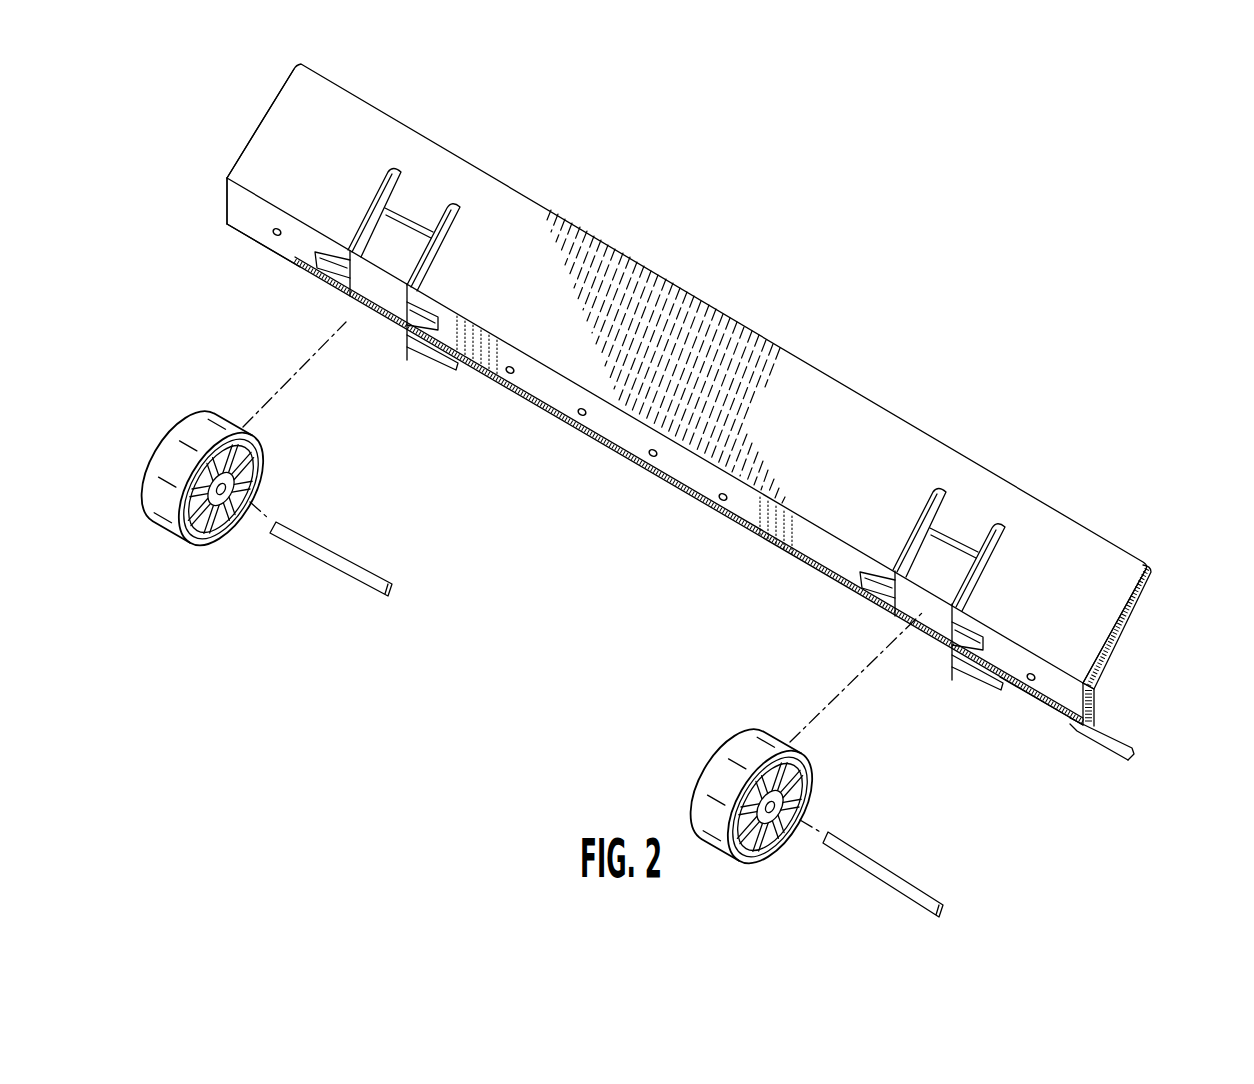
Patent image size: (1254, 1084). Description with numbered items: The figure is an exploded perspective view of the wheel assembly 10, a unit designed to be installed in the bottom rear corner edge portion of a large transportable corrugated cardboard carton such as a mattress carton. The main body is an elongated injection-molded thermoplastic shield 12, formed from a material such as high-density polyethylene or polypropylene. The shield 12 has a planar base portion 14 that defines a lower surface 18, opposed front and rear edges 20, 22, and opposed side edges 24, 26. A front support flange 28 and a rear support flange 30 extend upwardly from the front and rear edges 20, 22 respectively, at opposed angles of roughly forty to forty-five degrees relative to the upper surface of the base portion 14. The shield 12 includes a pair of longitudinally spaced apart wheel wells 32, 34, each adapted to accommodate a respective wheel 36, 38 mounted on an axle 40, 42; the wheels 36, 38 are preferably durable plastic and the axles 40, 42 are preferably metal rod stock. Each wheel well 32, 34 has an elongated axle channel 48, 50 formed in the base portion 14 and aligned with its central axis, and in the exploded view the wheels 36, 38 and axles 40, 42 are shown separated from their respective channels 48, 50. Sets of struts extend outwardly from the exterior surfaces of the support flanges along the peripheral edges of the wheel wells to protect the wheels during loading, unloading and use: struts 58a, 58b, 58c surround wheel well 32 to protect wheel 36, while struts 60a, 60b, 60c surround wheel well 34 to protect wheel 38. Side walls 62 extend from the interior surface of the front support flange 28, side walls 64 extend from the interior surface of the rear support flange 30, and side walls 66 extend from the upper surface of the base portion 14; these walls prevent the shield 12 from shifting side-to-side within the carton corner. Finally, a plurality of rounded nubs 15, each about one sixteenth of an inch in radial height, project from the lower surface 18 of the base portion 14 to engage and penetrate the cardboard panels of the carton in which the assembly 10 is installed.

The wheel assembly 10 is at (862, 274).
The shield 12 is at (784, 345).
The base portion 14 is at (673, 467).
The rounded nubs 15 is at (727, 503).
The lower surface 18 is at (602, 427).
The front edge 20 is at (240, 182).
The rear edge 22 is at (236, 228).
The side edge 24 is at (224, 203).
The side edge 26 is at (1070, 720).
The front support flange 28 is at (1122, 557).
The rear support flange 30 is at (1113, 754).
The wheel well 32 is at (416, 208).
The wheel well 34 is at (978, 504).
The wheel 36 is at (153, 523).
The wheel 38 is at (755, 861).
The axle 40 is at (340, 557).
The axle 42 is at (912, 882).
The axle channel 48 is at (411, 287).
The axle channel 50 is at (915, 603).
The strut 58a is at (369, 210).
The strut 58b is at (449, 228).
The strut 58c is at (438, 364).
The strut 60a is at (913, 514).
The strut 60b is at (1015, 567).
The strut 60c is at (947, 705).
The side walls of front support flange 62 is at (1140, 617).
The side walls of rear support flange 64 is at (1128, 758).
The side walls of base portion 66 is at (1097, 697).